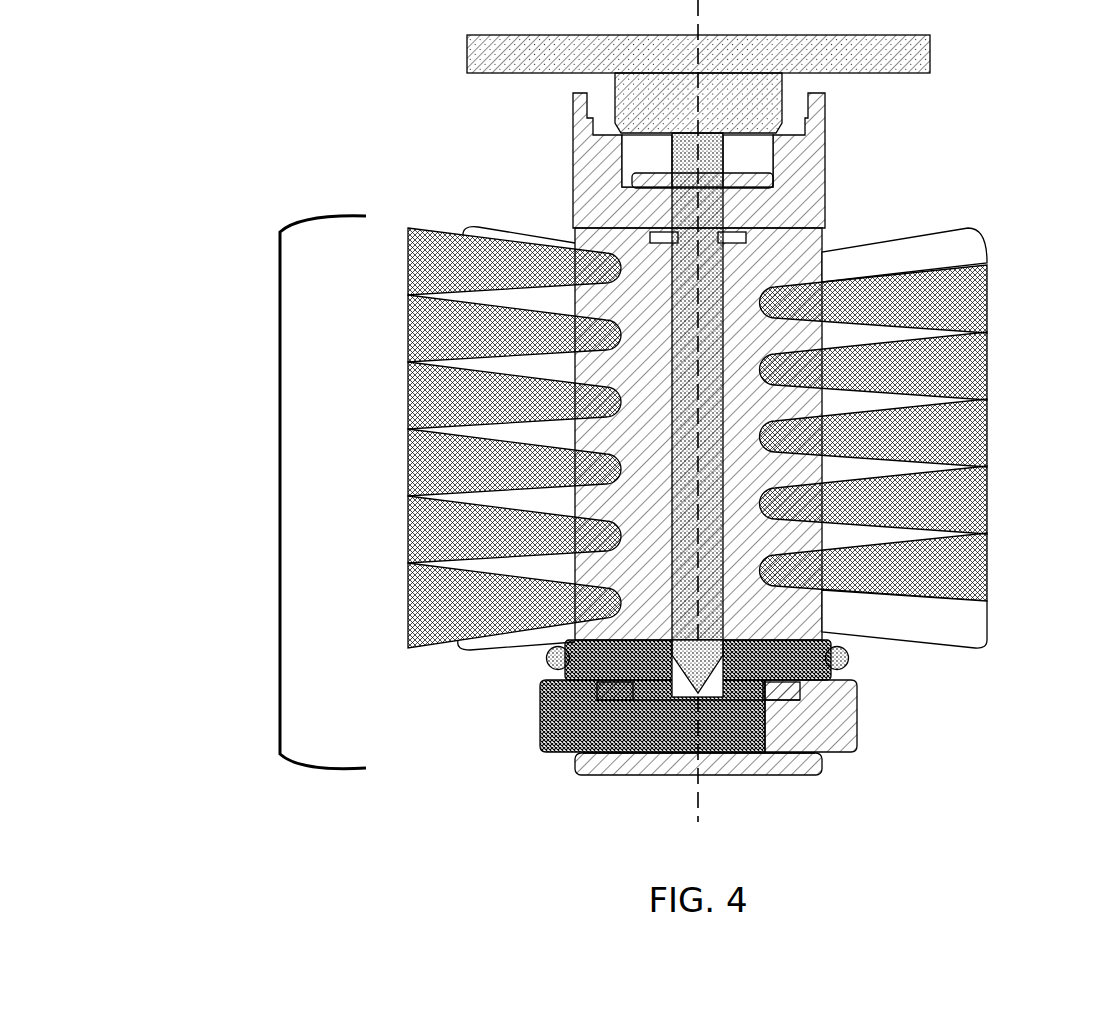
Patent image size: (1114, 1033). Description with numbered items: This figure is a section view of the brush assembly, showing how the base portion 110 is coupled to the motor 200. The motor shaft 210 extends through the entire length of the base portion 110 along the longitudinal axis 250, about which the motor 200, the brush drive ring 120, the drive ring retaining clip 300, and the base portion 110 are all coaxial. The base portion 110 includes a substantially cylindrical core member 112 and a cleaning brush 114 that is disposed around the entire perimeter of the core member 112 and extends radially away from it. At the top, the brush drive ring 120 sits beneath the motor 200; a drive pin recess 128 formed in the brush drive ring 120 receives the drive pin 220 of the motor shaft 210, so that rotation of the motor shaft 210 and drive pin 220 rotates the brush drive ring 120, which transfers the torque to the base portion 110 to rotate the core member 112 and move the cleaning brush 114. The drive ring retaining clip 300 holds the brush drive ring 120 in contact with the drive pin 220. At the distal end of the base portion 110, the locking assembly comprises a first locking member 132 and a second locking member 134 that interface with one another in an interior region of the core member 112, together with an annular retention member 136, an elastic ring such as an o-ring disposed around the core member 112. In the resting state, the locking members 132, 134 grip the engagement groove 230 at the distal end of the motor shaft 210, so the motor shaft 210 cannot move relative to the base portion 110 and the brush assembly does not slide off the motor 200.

The base portion 110 is at (280, 460).
The core member 112 is at (787, 253).
The cleaning brush 114 is at (947, 252).
The brush drive ring 120 is at (813, 142).
The drive pin recess 128 is at (648, 155).
The first locking member 132 is at (573, 727).
The second locking member 134 is at (835, 725).
The annular retention member 136 is at (855, 662).
The motor 200 is at (880, 59).
The motor shaft 210 is at (703, 383).
The drive pin 220 is at (747, 180).
The engagement groove 230 is at (713, 628).
The longitudinal axis 250 is at (702, 807).
The drive ring retaining clip 300 is at (670, 237).